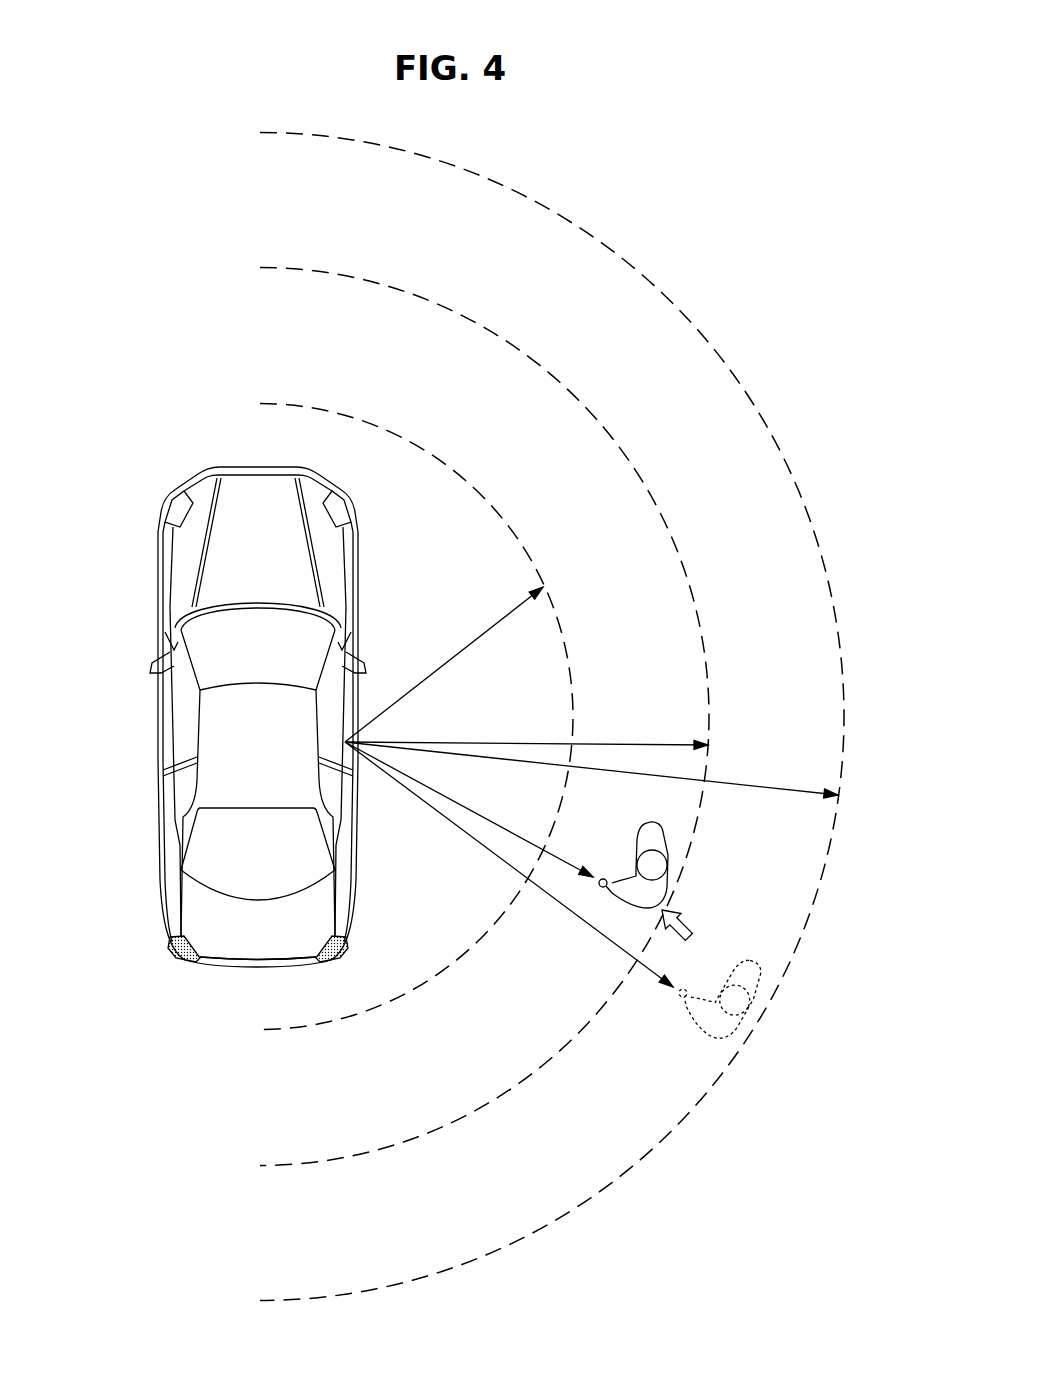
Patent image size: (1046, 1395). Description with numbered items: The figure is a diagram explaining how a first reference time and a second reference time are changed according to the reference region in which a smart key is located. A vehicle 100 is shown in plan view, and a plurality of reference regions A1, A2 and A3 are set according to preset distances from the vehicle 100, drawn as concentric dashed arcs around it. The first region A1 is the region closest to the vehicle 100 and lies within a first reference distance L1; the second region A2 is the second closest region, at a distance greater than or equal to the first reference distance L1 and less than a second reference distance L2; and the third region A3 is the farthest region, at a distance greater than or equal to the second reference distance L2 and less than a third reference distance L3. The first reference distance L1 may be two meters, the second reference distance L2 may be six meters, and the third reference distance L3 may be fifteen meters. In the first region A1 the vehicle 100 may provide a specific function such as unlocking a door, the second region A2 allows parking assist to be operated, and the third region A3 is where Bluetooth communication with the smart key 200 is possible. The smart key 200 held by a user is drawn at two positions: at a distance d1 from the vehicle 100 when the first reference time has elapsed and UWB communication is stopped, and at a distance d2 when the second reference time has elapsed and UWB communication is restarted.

The vehicle 100 is at (138, 704).
The smart key 200 is at (604, 872).
The first region A1 is at (387, 440).
The second region A2 is at (461, 324).
The third region A3 is at (528, 206).
The first reference distance L1 is at (543, 587).
The second reference distance L2 is at (345, 742).
The third reference distance L3 is at (345, 745).
The distance d1 is at (345, 742).
The distance d2 is at (345, 742).